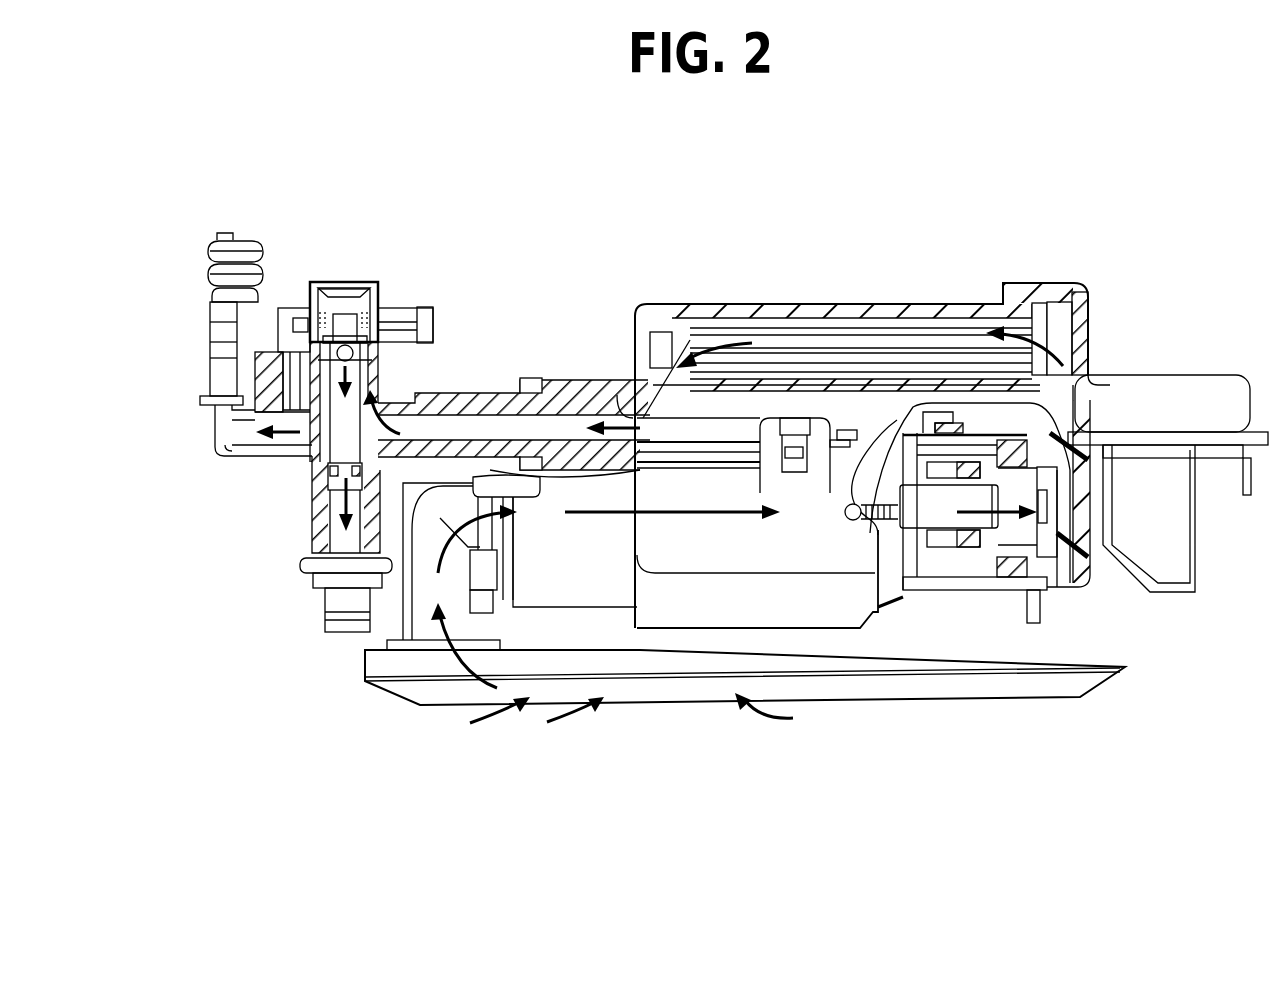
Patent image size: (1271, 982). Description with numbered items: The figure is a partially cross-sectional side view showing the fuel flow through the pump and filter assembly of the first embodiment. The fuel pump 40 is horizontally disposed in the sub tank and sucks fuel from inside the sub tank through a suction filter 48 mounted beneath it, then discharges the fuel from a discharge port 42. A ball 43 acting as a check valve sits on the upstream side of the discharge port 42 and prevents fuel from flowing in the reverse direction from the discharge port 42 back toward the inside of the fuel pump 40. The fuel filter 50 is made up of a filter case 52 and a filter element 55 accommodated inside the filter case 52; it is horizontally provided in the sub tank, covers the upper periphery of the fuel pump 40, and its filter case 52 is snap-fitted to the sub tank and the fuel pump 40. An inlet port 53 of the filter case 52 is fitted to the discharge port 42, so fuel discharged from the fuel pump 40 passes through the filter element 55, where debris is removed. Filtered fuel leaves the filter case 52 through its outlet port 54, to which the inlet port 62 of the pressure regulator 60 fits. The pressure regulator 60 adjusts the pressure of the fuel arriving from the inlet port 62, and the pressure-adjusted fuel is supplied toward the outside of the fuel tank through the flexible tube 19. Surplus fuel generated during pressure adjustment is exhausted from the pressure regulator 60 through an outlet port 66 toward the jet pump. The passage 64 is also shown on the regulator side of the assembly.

The flexible tube 19 is at (210, 248).
The fuel pump 40 is at (612, 612).
The discharge port 42 is at (937, 512).
The ball 43 is at (850, 520).
The suction filter 48 is at (403, 698).
The fuel filter 50 is at (894, 280).
The filter case 52 is at (968, 298).
The inlet port 53 is at (987, 550).
The outlet port 54 is at (580, 377).
The filter element 55 is at (804, 307).
The pressure regulator 60 is at (313, 504).
The inlet port 62 is at (458, 397).
The return passage 64 is at (212, 432).
The outlet port 66 is at (323, 602).